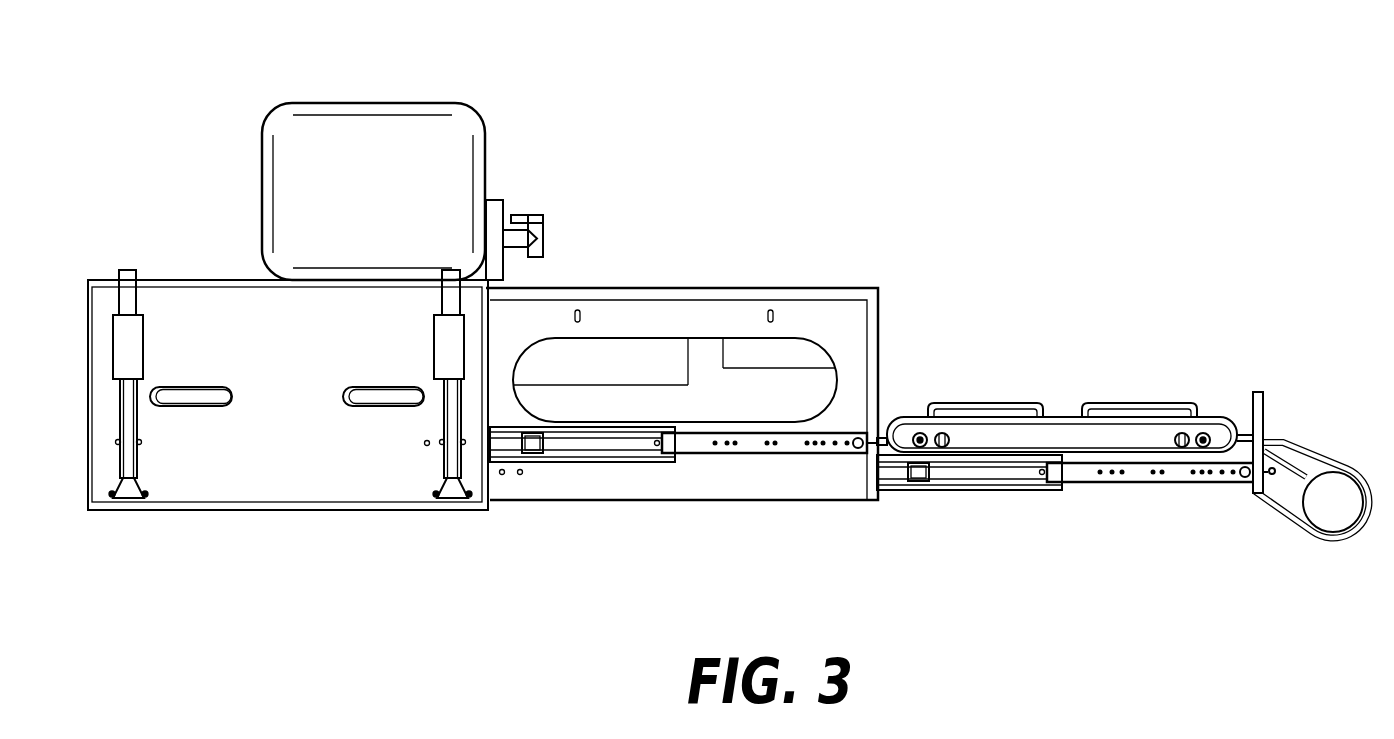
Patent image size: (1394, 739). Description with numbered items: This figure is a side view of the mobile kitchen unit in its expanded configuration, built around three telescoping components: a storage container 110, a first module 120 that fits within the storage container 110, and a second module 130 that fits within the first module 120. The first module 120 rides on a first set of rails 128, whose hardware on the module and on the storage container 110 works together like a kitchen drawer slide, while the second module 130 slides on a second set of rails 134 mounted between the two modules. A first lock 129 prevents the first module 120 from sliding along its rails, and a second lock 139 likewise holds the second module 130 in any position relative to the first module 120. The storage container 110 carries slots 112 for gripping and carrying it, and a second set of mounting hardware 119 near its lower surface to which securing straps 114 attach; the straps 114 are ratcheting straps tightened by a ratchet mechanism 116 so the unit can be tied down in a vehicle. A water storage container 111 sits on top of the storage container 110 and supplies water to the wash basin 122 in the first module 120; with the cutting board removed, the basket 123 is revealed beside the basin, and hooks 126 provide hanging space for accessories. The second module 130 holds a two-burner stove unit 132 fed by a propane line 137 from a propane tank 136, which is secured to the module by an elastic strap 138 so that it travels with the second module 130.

The storage container 110 is at (105, 280).
The water storage container 111 is at (340, 130).
The slots 112 is at (344, 395).
The securing straps 114 is at (127, 425).
The ratchet mechanism 116 is at (133, 338).
The second set of mounting hardware 119 is at (140, 492).
The first module 120 is at (723, 483).
The wash basin 122 is at (623, 373).
The basket 123 is at (763, 355).
The hooks 126 is at (769, 302).
The first set of rails 128 is at (588, 445).
The first lock 129 is at (882, 440).
The second module 130 is at (1258, 392).
The stove unit 132 is at (1053, 433).
The second set of rails 134 is at (983, 470).
The propane tank 136 is at (1343, 517).
The propane line 137 is at (1278, 432).
The elastic strap 138 is at (1260, 497).
The second lock 139 is at (1277, 471).